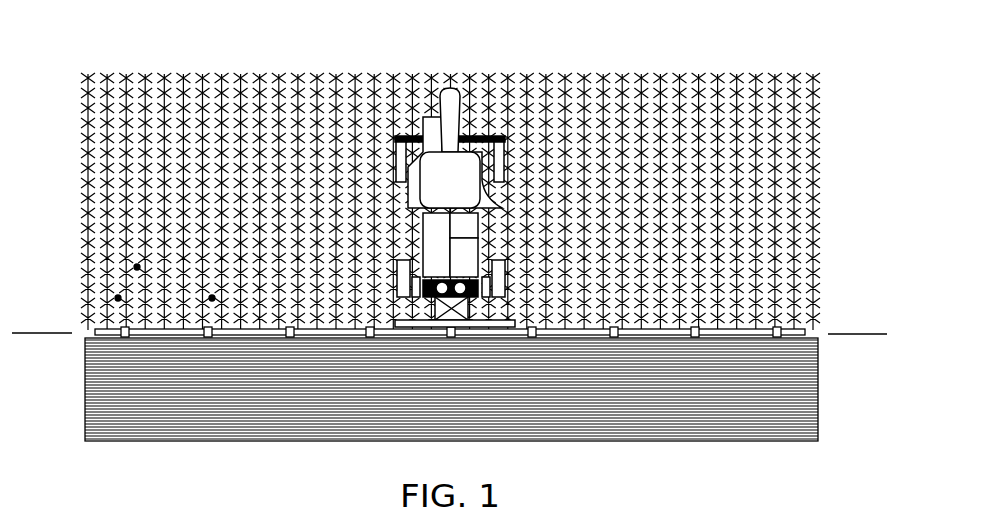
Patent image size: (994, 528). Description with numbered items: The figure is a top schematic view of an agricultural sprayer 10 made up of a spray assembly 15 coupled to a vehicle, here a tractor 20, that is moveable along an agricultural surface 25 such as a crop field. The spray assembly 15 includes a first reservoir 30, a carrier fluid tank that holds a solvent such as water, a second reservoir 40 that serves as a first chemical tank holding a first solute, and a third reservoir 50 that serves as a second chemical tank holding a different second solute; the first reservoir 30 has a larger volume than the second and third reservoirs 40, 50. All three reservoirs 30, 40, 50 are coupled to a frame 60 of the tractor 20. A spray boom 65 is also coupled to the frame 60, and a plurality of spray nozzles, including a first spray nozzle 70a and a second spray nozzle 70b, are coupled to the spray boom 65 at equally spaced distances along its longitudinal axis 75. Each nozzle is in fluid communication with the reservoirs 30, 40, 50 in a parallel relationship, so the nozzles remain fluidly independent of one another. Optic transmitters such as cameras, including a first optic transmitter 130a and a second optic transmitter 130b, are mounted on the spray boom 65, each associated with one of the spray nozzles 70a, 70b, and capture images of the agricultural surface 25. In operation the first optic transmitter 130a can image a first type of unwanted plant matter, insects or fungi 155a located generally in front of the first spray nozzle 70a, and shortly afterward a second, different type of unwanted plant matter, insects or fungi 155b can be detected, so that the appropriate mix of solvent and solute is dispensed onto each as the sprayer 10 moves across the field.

The agricultural sprayer 10 is at (256, 38).
The spray assembly 15 is at (826, 313).
The tractor 20 is at (443, 179).
The agricultural surface 25 is at (790, 118).
The first reservoir 30 is at (424, 234).
The second reservoir 40 is at (479, 234).
The third reservoir 50 is at (479, 250).
The frame 60 is at (398, 268).
The spray boom 65 is at (464, 362).
The first spray nozzle 70a is at (97, 407).
The second spray nozzle 70b is at (191, 407).
The first optic transmitter 130a is at (127, 340).
The second optic transmitter 130b is at (208, 340).
The longitudinal axis 75 is at (860, 338).
The first type of unwanted plant matter/insects/fungi 155a is at (118, 298).
The second type of unwanted plant matter/insects/fungi 155b is at (212, 298).